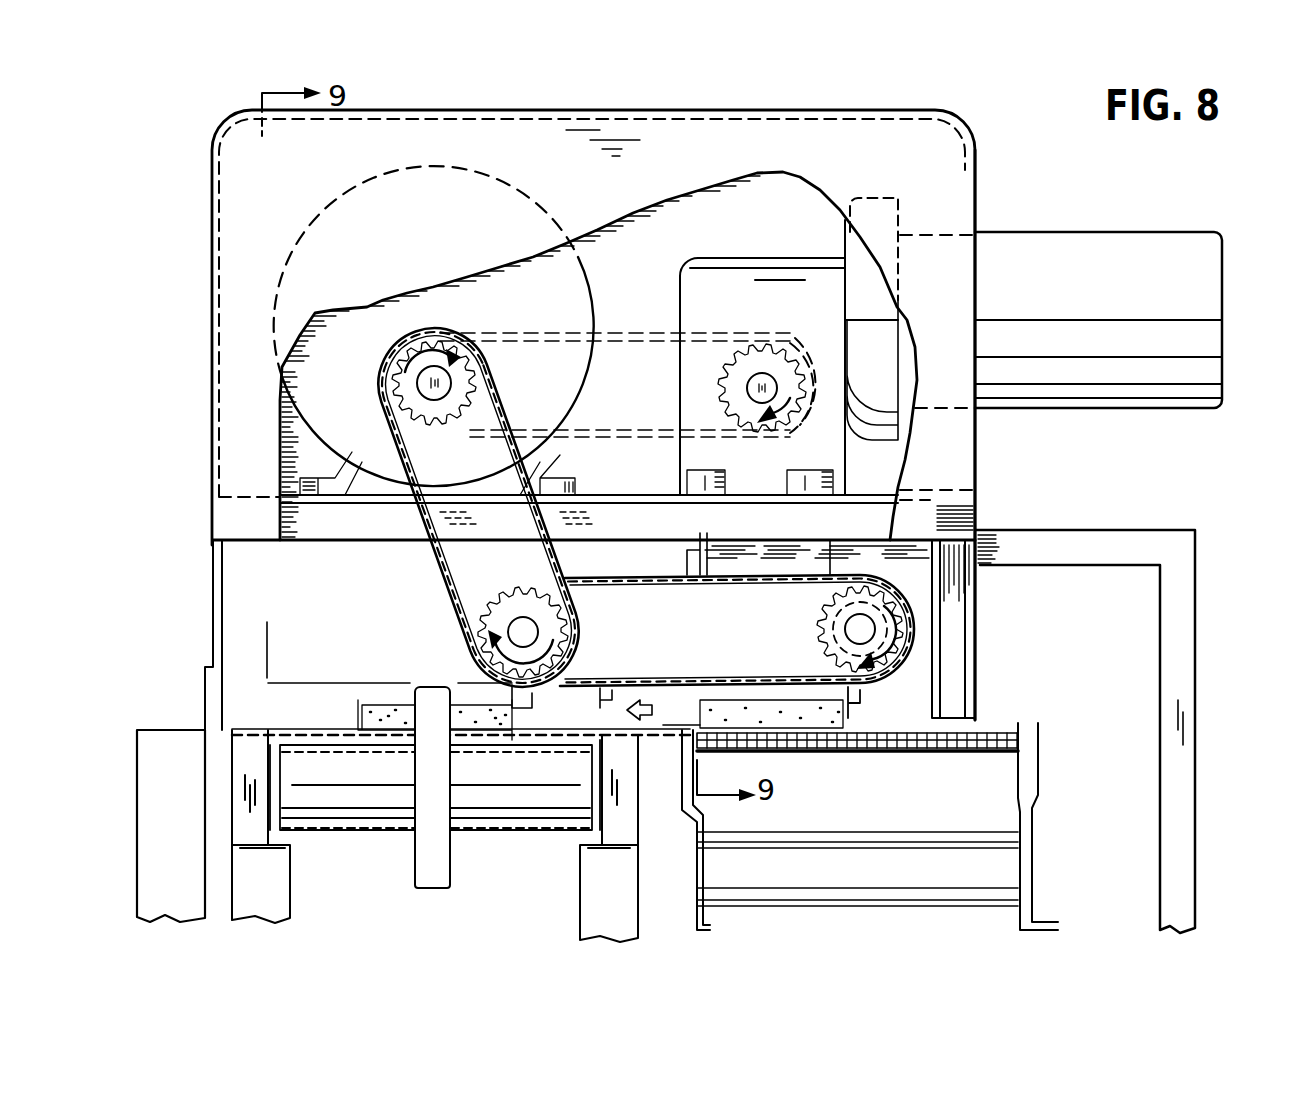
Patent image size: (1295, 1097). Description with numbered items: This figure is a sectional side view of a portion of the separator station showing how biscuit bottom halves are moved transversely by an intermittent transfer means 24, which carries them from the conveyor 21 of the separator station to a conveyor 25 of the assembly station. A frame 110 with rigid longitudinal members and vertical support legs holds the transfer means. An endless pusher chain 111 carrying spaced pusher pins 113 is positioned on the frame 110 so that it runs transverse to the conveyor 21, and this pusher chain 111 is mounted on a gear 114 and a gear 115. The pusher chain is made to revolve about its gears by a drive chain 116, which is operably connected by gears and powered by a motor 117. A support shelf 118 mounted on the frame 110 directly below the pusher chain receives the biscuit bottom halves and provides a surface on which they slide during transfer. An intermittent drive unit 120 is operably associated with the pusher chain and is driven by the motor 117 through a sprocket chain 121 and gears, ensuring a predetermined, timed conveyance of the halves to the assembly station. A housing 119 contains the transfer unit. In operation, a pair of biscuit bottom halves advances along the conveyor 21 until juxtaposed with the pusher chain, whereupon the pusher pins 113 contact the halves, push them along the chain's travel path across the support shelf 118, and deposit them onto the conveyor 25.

The intermittent transfer means 24 is at (208, 286).
The intermittent drive unit 120 is at (356, 376).
The sprocket chain 121 is at (664, 440).
The housing 119 is at (972, 207).
The motor 117 is at (1097, 255).
The drive chain 116 is at (440, 553).
The gear 114 is at (503, 617).
The pusher chain 111 is at (773, 578).
The gear 115 is at (880, 608).
The frame 110 is at (1177, 657).
The support shelf 118 is at (613, 722).
The pusher pins 113 is at (852, 713).
The conveyor 21 is at (917, 746).
The conveyor 25 is at (435, 727).